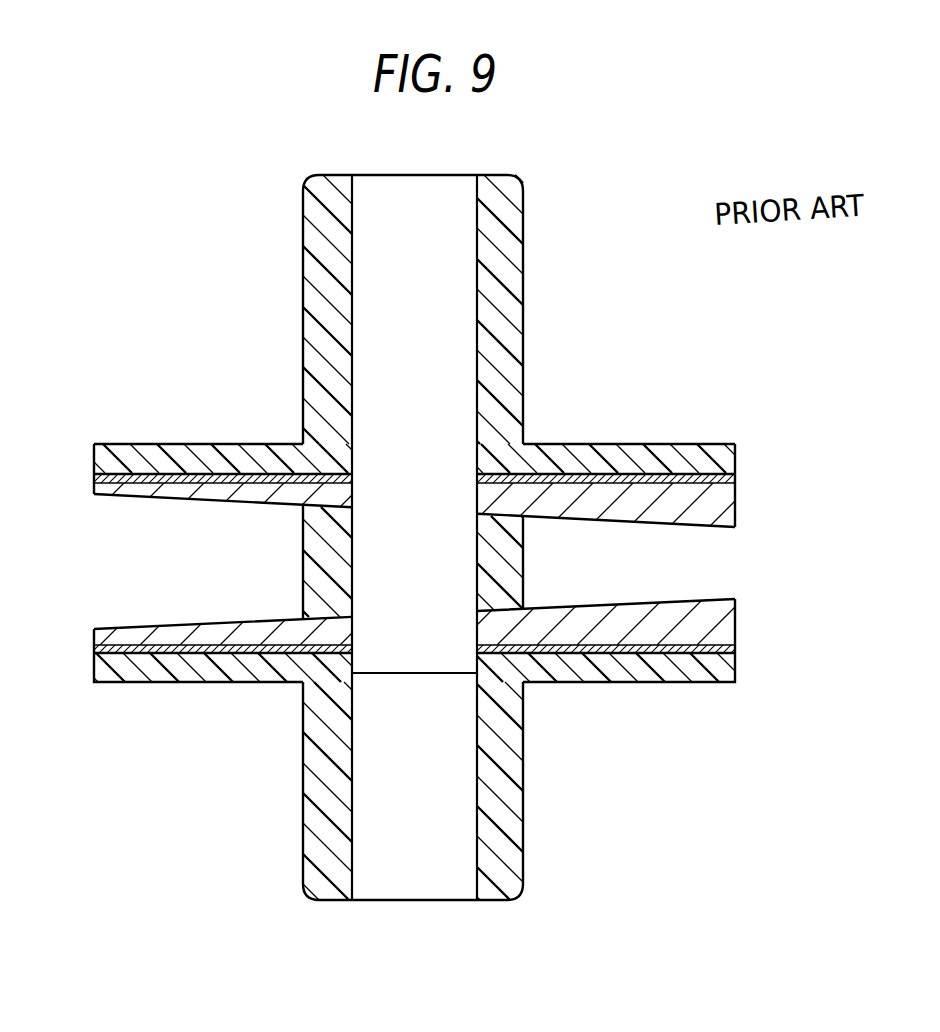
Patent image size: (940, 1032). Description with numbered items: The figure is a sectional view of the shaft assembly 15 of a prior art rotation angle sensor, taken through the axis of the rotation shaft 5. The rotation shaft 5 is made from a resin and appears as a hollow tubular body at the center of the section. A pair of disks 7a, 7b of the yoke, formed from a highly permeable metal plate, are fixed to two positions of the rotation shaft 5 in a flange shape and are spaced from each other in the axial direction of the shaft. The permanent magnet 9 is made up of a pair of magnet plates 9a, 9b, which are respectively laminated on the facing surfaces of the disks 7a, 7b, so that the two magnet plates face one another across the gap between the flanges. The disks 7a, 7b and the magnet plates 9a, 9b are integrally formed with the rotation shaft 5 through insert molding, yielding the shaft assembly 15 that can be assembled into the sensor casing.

The rotation shaft 5 is at (505, 281).
The disk 7a is at (632, 462).
The disk 7b is at (653, 655).
The permanent magnet 9 is at (878, 497).
The magnet plate 9a is at (713, 508).
The magnet plate 9b is at (733, 616).
The shaft assembly 15 is at (233, 427).